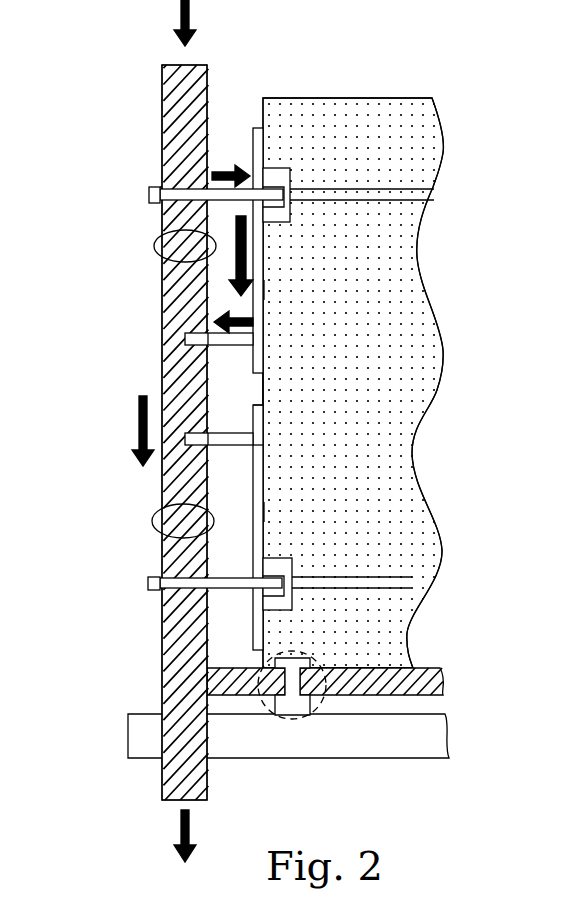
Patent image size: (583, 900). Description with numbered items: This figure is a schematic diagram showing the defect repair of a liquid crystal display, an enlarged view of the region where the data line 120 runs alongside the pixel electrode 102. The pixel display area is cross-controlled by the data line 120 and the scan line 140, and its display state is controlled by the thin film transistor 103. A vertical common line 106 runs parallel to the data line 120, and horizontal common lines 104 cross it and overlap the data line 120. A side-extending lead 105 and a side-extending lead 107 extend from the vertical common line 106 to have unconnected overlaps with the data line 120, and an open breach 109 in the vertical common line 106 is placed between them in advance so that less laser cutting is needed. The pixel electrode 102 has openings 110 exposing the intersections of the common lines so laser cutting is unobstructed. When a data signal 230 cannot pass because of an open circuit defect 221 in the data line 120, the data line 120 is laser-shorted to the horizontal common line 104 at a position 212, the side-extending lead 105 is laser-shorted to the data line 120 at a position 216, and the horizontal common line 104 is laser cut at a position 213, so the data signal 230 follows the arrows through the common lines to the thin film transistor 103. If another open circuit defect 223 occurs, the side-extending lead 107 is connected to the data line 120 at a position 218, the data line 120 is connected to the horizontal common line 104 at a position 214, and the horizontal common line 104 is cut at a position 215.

The pixel electrode 102 is at (395, 122).
The thin film transistor 103 is at (296, 720).
The horizontal common line 104 is at (148, 196).
The side-extending lead 105 is at (207, 347).
The vertical common line 106 is at (268, 291).
The side-extending lead 107 is at (207, 445).
The open breach 109 is at (268, 405).
The opening 110 is at (281, 184).
The data line 120 is at (162, 112).
The scan line 140 is at (452, 734).
The position 212 is at (155, 185).
The position 213 is at (284, 187).
The position 214 is at (158, 593).
The position 215 is at (285, 604).
The position 216 is at (270, 387).
The position 218 is at (264, 452).
The open circuit defect 221 is at (155, 245).
The open circuit defect 223 is at (153, 521).
The data signal 230 is at (190, 14).